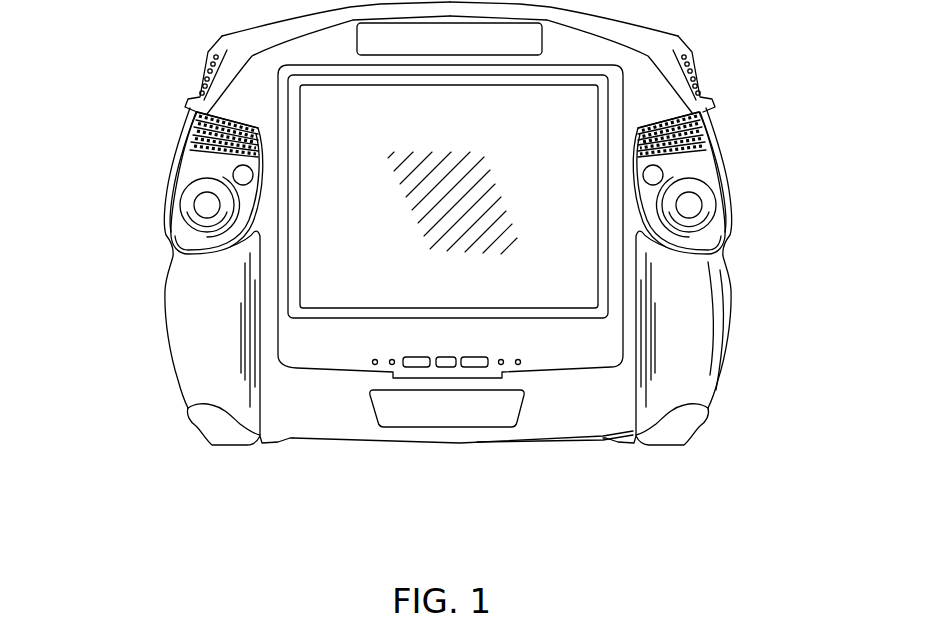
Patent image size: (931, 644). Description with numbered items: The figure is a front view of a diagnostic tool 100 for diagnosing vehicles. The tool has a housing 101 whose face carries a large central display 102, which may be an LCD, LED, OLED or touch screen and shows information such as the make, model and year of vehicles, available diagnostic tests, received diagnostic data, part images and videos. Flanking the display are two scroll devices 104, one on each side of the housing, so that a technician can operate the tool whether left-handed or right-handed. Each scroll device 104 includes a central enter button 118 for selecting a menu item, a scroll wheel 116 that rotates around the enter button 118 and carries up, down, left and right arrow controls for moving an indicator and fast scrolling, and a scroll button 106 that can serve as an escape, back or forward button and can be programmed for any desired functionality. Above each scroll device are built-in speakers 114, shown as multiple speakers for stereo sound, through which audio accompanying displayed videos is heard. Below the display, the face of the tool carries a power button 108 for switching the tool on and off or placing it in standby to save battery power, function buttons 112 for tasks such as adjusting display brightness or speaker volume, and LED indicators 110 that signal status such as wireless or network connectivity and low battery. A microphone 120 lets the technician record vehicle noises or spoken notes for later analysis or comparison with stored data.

The diagnostic tool 100 is at (678, 42).
The housing 101 is at (293, 438).
The display 102 is at (333, 272).
The scroll device 104 is at (188, 168).
The scroll button 106 is at (243, 178).
The power button 108 is at (446, 366).
The LED indicators 110 is at (518, 364).
The function buttons 112 is at (420, 366).
The speakers 114 is at (203, 131).
The scroll wheel 116 is at (210, 222).
The enter button 118 is at (208, 205).
The microphone 120 is at (375, 365).